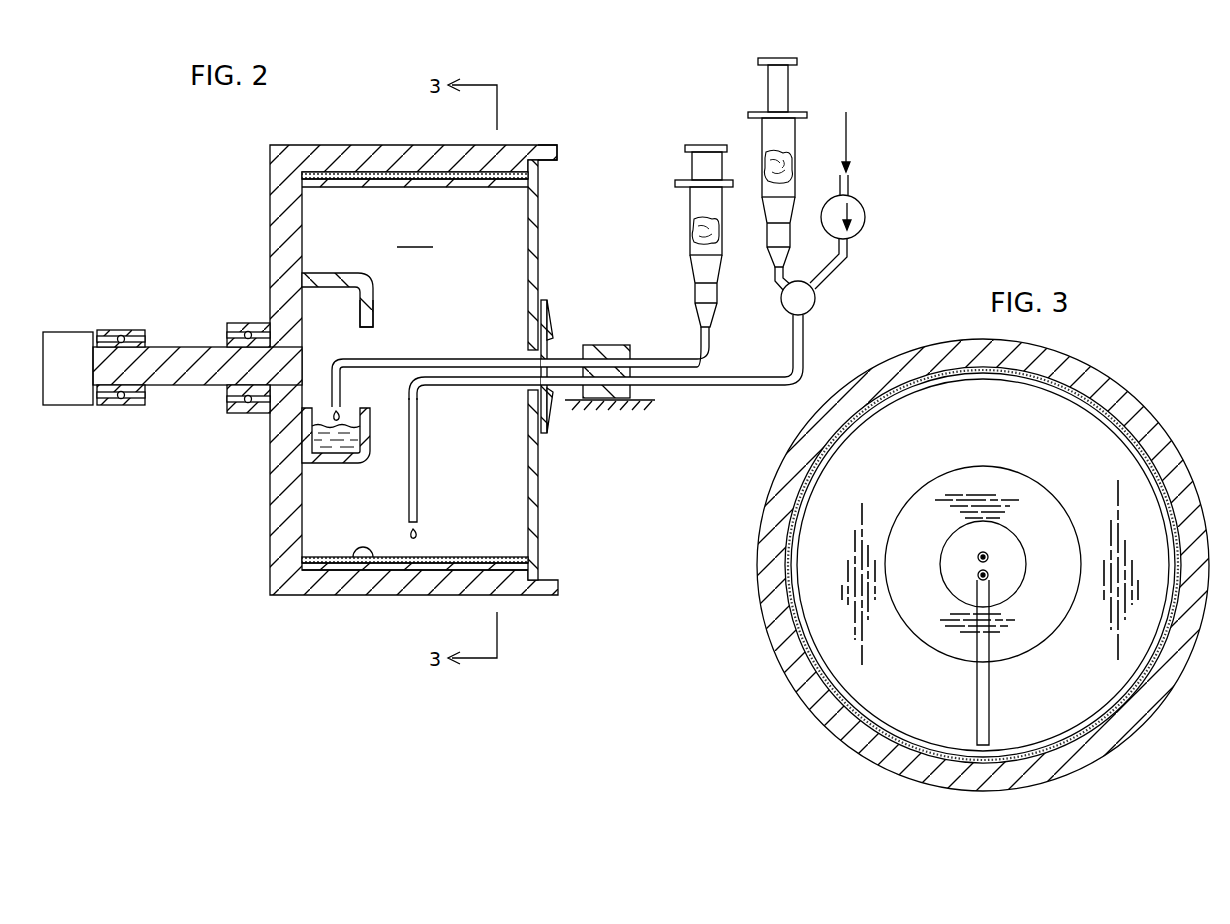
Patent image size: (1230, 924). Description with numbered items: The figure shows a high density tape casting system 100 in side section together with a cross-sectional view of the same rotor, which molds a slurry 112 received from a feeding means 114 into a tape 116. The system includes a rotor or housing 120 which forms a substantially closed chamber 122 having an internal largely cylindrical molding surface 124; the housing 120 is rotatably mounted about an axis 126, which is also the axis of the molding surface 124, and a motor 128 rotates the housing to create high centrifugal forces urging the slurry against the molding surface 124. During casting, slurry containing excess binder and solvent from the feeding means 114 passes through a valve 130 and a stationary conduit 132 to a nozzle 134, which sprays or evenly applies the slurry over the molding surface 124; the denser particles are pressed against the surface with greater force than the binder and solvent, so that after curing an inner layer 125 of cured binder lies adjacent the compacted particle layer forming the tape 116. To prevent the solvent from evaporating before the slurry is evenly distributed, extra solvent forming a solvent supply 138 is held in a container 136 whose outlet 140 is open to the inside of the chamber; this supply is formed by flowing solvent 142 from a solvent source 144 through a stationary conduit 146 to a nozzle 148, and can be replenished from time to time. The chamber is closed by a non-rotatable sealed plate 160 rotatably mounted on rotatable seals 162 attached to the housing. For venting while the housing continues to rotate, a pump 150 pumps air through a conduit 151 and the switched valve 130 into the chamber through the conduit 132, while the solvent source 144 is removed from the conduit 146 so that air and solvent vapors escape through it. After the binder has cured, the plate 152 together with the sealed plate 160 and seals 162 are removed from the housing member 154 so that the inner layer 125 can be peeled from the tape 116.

In FIG. 2, the tape casting system 100 is at (604, 135).
In FIG. 2, the slurry 112 is at (791, 168).
In FIG. 2, the feeding means 114 is at (768, 130).
In FIG. 2, the tape 116 is at (328, 181).
In FIG. 3, the tape 116 is at (786, 547).
In FIG. 2, the housing 120 is at (296, 147).
In FIG. 3, the housing 120 is at (774, 472).
In FIG. 2, the chamber 122 is at (415, 236).
In FIG. 2, the molding surface 124 is at (352, 563).
In FIG. 2, the inner layer of cured binder 125 is at (435, 182).
In FIG. 3, the inner layer of cured binder 125 is at (850, 691).
In FIG. 2, the axis 126 is at (163, 360).
In FIG. 2, the motor 128 is at (70, 343).
In FIG. 2, the valve 130 is at (812, 307).
In FIG. 2, the conduit 132 is at (805, 352).
In FIG. 3, the conduit 132 is at (979, 582).
In FIG. 2, the nozzle 134 is at (419, 516).
In FIG. 2, the container 136 is at (304, 277).
In FIG. 3, the container 136 is at (1042, 511).
In FIG. 2, the solvent supply 138 is at (305, 448).
In FIG. 2, the outlet 140 is at (373, 326).
In FIG. 3, the outlet 140 is at (1020, 551).
In FIG. 2, the solvent 142 is at (698, 241).
In FIG. 2, the solvent source 144 is at (701, 202).
In FIG. 2, the stationary conduit 146 is at (651, 358).
In FIG. 3, the stationary conduit 146 is at (978, 555).
In FIG. 2, the nozzle 148 is at (322, 406).
In FIG. 2, the pump 150 is at (866, 212).
In FIG. 2, the conduit 151 is at (832, 281).
In FIG. 2, the plate 152 is at (540, 221).
In FIG. 2, the housing member 154 is at (559, 153).
In FIG. 2, the sealed plate 160 is at (549, 347).
In FIG. 2, the rotatable seals 162 is at (548, 323).